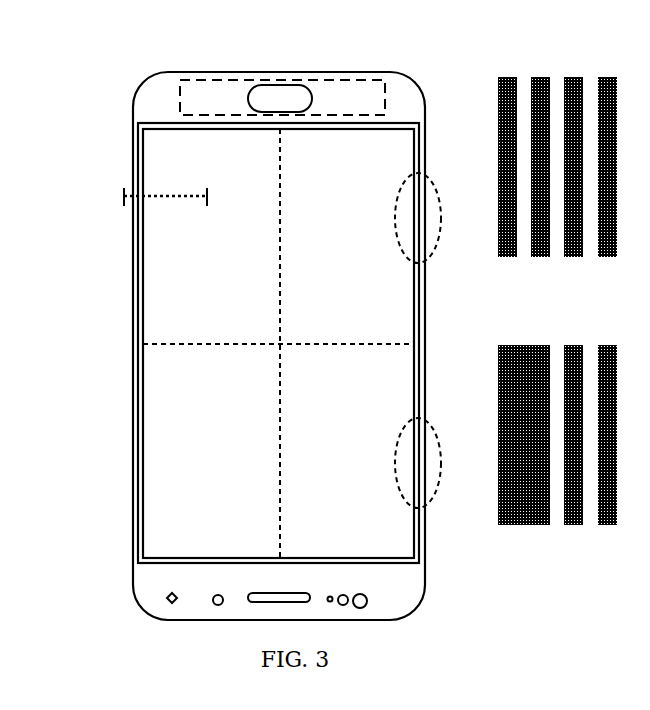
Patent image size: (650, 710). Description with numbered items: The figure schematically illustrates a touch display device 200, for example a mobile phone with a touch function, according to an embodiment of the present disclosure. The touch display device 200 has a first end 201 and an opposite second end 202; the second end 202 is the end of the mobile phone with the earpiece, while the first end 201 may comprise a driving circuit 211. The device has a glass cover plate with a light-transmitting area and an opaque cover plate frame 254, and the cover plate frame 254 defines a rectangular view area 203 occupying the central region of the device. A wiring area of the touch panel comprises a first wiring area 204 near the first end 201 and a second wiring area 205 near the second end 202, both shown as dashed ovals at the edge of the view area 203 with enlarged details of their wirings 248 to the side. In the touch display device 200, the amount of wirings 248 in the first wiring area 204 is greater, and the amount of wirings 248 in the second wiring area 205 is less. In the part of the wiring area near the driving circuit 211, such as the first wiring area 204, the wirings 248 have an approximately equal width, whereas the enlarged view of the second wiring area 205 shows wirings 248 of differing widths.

The touch display device 200 is at (57, 69).
The first end 201 is at (167, 100).
The second end 202 is at (167, 580).
The view area 203 is at (167, 263).
The first wiring area 204 is at (484, 181).
The second wiring area 205 is at (484, 426).
The driving circuit 211 is at (249, 72).
The wirings 248 is at (557, 312).
The cover plate frame 254 is at (138, 427).